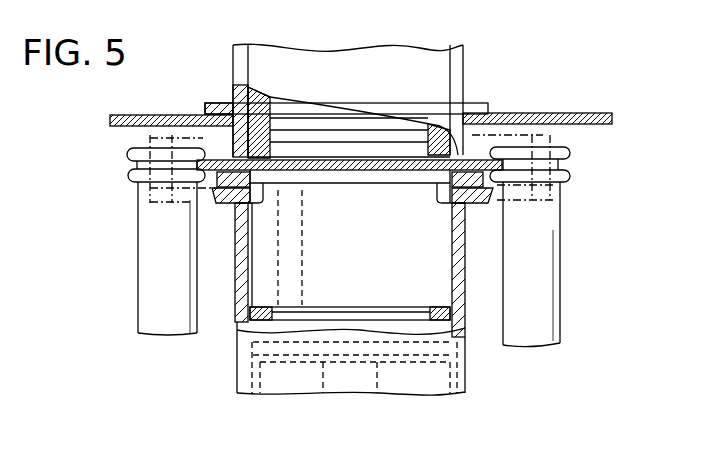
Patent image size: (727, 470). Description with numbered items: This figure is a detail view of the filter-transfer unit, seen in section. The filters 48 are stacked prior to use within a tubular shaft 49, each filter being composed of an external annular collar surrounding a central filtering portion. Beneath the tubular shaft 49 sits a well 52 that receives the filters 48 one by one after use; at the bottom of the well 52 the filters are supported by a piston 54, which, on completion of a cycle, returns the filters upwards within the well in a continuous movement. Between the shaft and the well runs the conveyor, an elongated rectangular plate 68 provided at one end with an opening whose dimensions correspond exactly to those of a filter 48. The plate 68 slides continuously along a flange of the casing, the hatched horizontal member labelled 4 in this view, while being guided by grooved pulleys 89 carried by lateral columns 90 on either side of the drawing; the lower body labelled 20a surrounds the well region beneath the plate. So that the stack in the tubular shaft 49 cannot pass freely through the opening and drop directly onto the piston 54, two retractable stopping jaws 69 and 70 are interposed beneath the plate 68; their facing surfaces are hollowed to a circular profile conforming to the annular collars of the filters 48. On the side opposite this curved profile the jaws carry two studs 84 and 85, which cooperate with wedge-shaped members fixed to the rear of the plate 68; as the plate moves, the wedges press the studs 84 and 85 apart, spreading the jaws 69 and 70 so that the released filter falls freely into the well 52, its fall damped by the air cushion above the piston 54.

The mounting flange 4 is at (562, 113).
The tubular shaft 49 is at (470, 81).
The elongated rectangular plate 68 is at (221, 158).
The lower housing 20a is at (452, 173).
The filter 48 is at (430, 303).
The well 52 is at (470, 375).
The piston 54 is at (357, 357).
The grooved pulleys 89 is at (132, 176).
The retractable stopping jaw 69 is at (176, 204).
The retractable stopping jaw 70 is at (530, 203).
The lateral column 90 is at (553, 298).
The stud 84 is at (143, 134).
The stud 85 is at (551, 135).